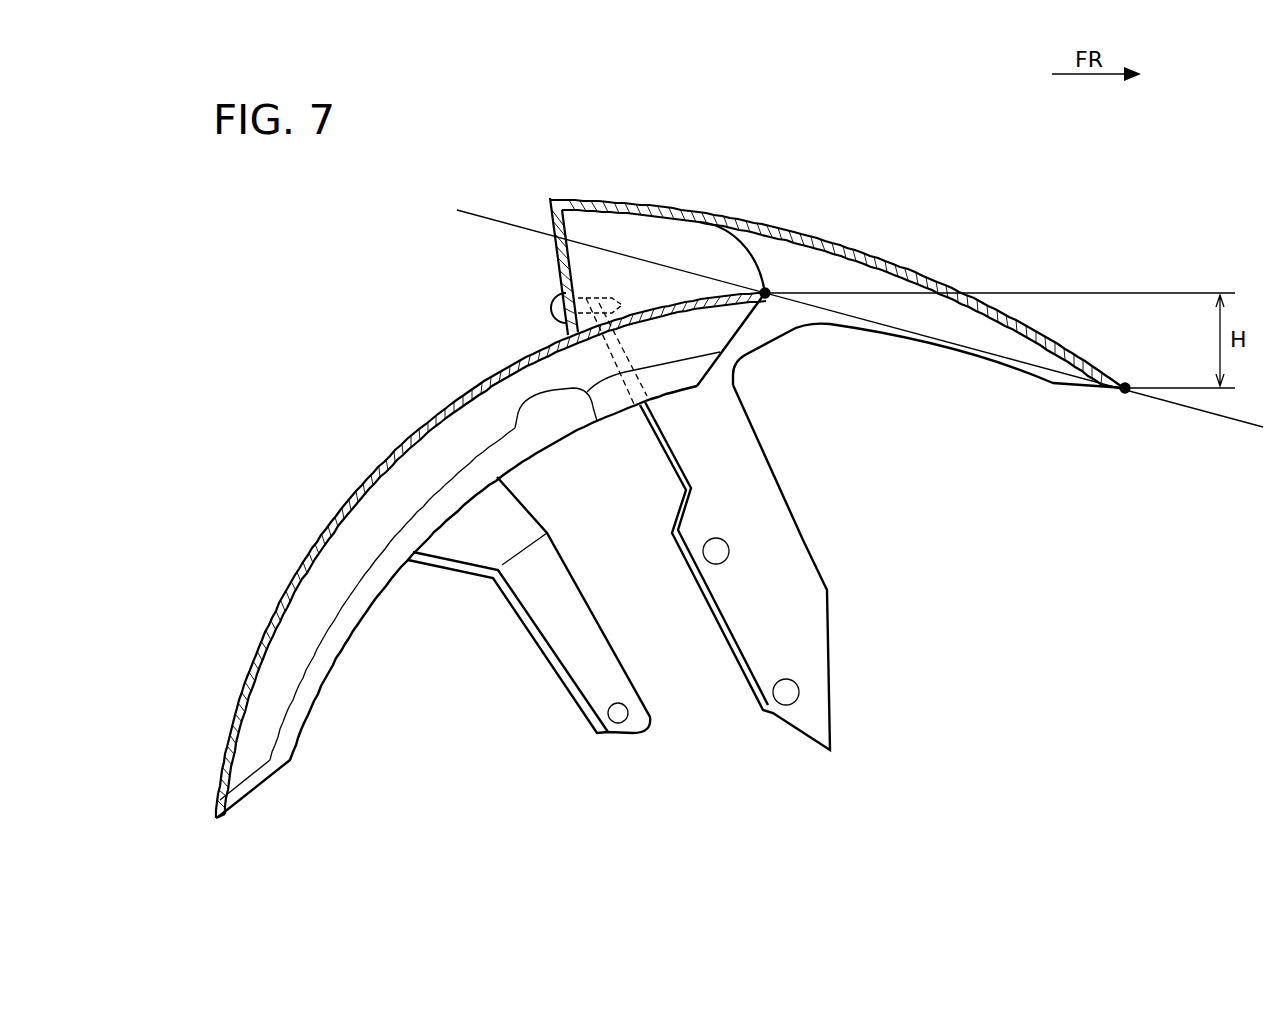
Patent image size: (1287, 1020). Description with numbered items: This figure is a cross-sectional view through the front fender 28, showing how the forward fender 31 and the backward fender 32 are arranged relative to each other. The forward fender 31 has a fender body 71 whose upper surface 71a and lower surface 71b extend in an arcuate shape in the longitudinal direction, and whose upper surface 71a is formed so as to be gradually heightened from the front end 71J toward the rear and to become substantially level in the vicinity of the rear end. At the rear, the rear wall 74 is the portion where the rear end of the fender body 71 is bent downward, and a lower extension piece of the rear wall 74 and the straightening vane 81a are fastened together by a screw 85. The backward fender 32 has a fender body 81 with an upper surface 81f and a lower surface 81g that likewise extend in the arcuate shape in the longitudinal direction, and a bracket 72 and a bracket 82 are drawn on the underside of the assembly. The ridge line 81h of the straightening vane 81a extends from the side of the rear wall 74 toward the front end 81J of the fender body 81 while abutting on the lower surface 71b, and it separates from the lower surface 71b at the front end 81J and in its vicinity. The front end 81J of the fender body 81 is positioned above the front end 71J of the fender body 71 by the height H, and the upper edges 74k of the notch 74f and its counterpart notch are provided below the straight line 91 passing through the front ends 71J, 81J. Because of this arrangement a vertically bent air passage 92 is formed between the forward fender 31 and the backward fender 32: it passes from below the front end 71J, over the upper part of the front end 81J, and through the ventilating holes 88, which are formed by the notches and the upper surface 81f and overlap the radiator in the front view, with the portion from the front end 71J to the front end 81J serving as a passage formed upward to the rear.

The front fender 28 is at (932, 194).
The forward fender 31 is at (1040, 313).
The backward fender 32 is at (247, 633).
The fender body 71 is at (917, 320).
The upper surface 71a is at (847, 246).
The lower surface 71b is at (877, 268).
The front end 71J is at (1125, 392).
The fender bracket 72 is at (846, 638).
The rear wall 74 is at (543, 206).
The upper edges 74k is at (562, 280).
The notch 74f is at (552, 304).
The fender body 81 is at (338, 596).
The straightening vane 81a is at (650, 226).
The upper surface 81f is at (333, 512).
The lower surface 81g is at (334, 538).
The ridge line 81h is at (750, 250).
The front end 81J is at (768, 290).
The cover bracket 82 is at (562, 695).
The screw 85 is at (556, 322).
The ventilating holes 88 is at (583, 264).
The straight line 91 is at (806, 306).
The air passage 92 is at (718, 247).